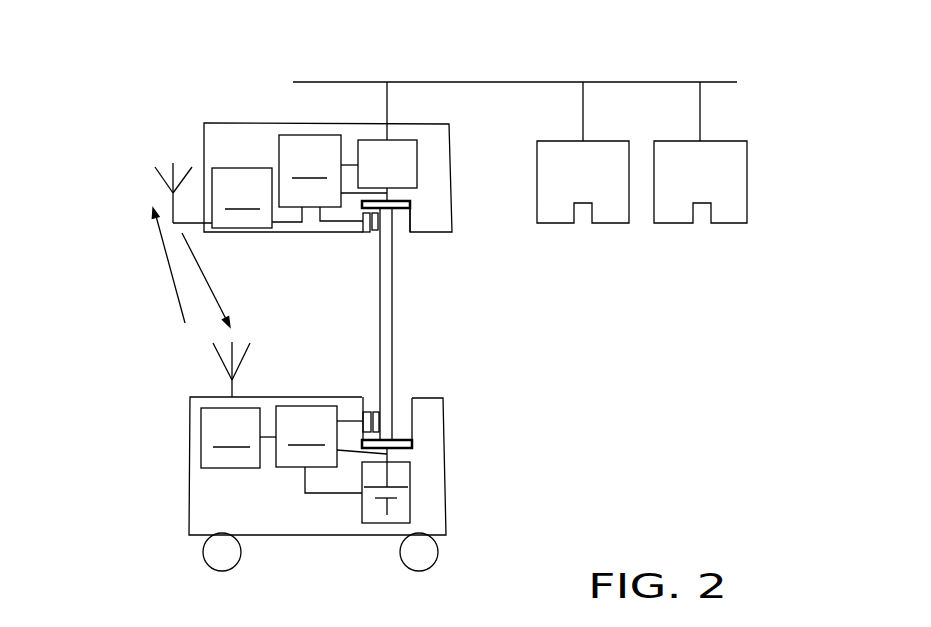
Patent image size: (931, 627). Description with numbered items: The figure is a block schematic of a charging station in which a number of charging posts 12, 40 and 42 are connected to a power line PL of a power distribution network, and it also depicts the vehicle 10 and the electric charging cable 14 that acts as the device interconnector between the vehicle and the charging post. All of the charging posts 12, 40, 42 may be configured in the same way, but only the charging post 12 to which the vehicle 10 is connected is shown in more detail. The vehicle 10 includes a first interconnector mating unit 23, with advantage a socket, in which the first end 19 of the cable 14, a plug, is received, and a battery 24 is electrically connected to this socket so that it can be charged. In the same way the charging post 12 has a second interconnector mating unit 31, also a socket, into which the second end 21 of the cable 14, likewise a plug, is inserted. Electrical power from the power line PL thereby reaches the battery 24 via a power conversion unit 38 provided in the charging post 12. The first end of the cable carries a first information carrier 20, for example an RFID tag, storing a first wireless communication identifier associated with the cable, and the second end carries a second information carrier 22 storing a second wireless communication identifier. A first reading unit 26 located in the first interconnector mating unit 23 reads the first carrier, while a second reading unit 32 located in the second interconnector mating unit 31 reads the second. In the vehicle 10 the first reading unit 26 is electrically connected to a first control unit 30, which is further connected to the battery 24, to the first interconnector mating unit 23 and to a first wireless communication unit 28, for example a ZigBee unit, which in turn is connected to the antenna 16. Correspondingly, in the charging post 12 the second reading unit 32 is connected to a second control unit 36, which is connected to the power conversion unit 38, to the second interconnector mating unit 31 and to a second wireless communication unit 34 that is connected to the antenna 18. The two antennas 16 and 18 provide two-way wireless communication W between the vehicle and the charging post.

The vehicle 10 is at (447, 473).
The charging post 12 is at (452, 188).
The electric charging cable 14 is at (390, 298).
The antenna 16 is at (231, 384).
The antenna 18 is at (172, 217).
The first end 19 is at (400, 443).
The first information carrier 20 is at (377, 413).
The second end 21 is at (393, 204).
The second information carrier 22 is at (377, 233).
The first interconnector mating unit 23 is at (410, 415).
The battery 24 is at (362, 512).
The first reading unit 26 is at (364, 410).
The first wireless communication unit 28 is at (238, 438).
The first control unit 30 is at (331, 449).
The second interconnector mating unit 31 is at (408, 217).
The second reading unit 32 is at (362, 233).
The second wireless communication unit 34 is at (257, 198).
The second control unit 36 is at (333, 178).
The power conversion unit 38 is at (387, 141).
The charging post 40 is at (632, 220).
The charging post 42 is at (802, 225).
The power line PL is at (595, 43).
The two-way wireless communication W is at (177, 267).